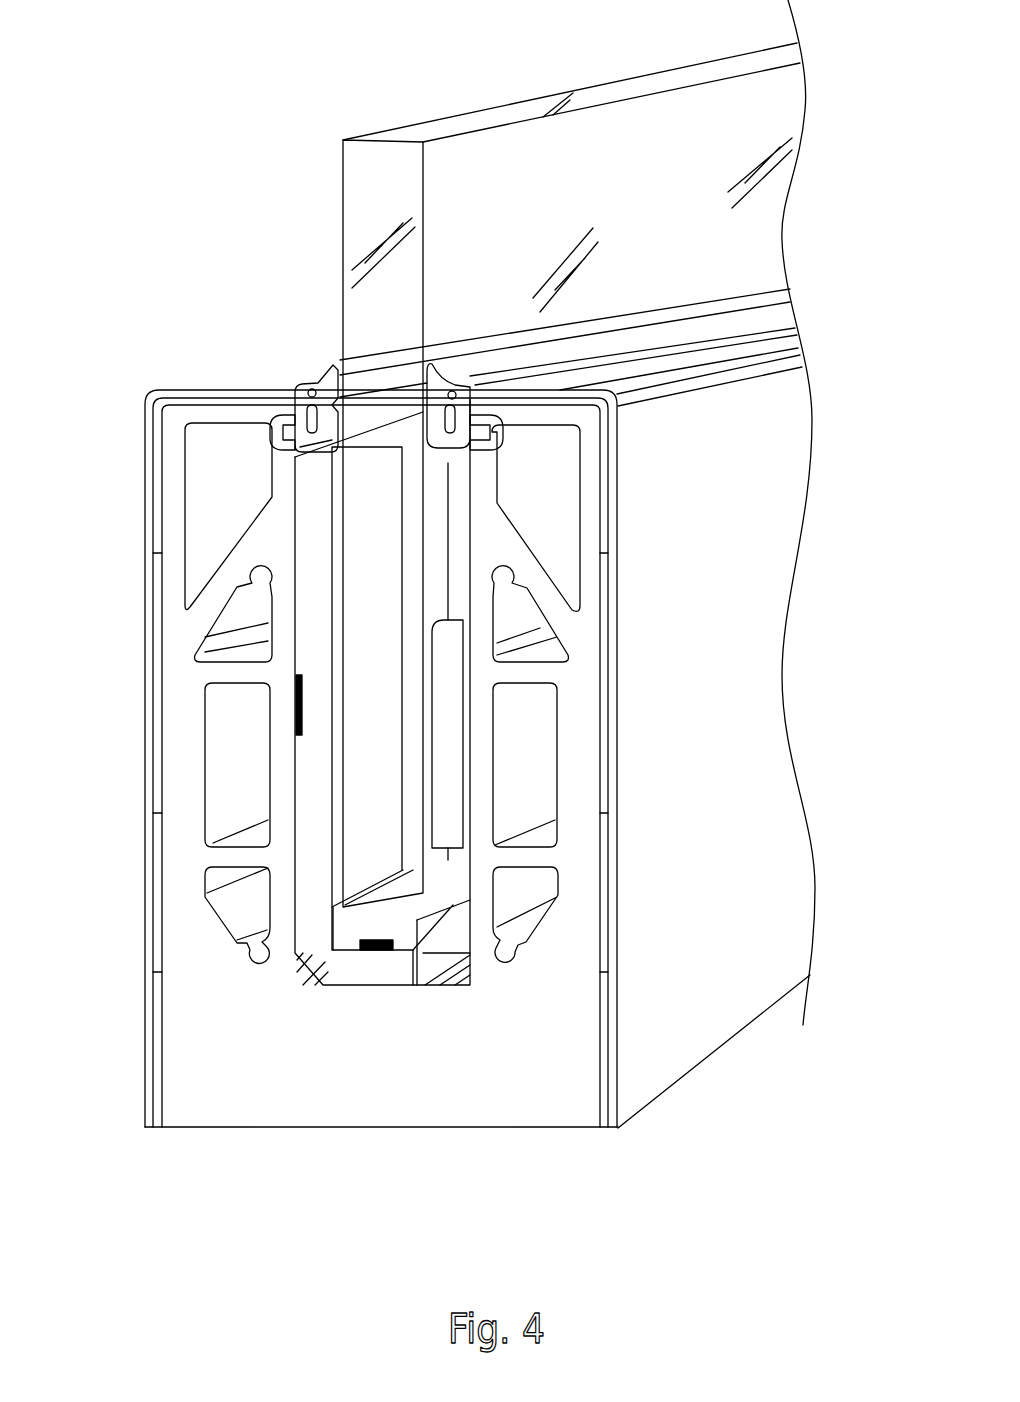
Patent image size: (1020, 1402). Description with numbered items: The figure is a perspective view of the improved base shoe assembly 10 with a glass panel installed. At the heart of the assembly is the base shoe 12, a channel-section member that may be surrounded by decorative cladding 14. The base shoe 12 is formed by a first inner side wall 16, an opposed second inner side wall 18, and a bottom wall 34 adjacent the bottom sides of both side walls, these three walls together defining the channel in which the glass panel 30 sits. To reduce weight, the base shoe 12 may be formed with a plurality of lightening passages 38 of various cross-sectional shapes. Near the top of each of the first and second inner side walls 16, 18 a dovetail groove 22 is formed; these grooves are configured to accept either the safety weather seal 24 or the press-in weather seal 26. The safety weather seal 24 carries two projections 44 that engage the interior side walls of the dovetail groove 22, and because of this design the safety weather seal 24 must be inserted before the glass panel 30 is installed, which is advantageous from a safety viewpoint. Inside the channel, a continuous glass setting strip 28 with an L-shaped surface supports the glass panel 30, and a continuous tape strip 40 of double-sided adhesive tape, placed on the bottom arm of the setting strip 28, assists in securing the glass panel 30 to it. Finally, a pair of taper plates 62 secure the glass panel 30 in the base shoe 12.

The base shoe assembly 10 is at (140, 294).
The base shoe 12 is at (569, 1130).
The decorative cladding 14 is at (705, 1055).
The first inner side wall 16 is at (295, 548).
The second inner side wall 18 is at (475, 577).
The dovetail groove 22 is at (272, 425).
The safety weather seal 24 is at (332, 365).
The press-in weather seal 26 is at (508, 368).
The continuous glass setting strip 28 is at (325, 990).
The glass panel 30 is at (424, 196).
The bottom wall 34 is at (462, 990).
The lightening passages 38 is at (535, 763).
The continuous tape strip 40 is at (370, 985).
The projections 44 is at (278, 420).
The taper plates 62 is at (445, 820).